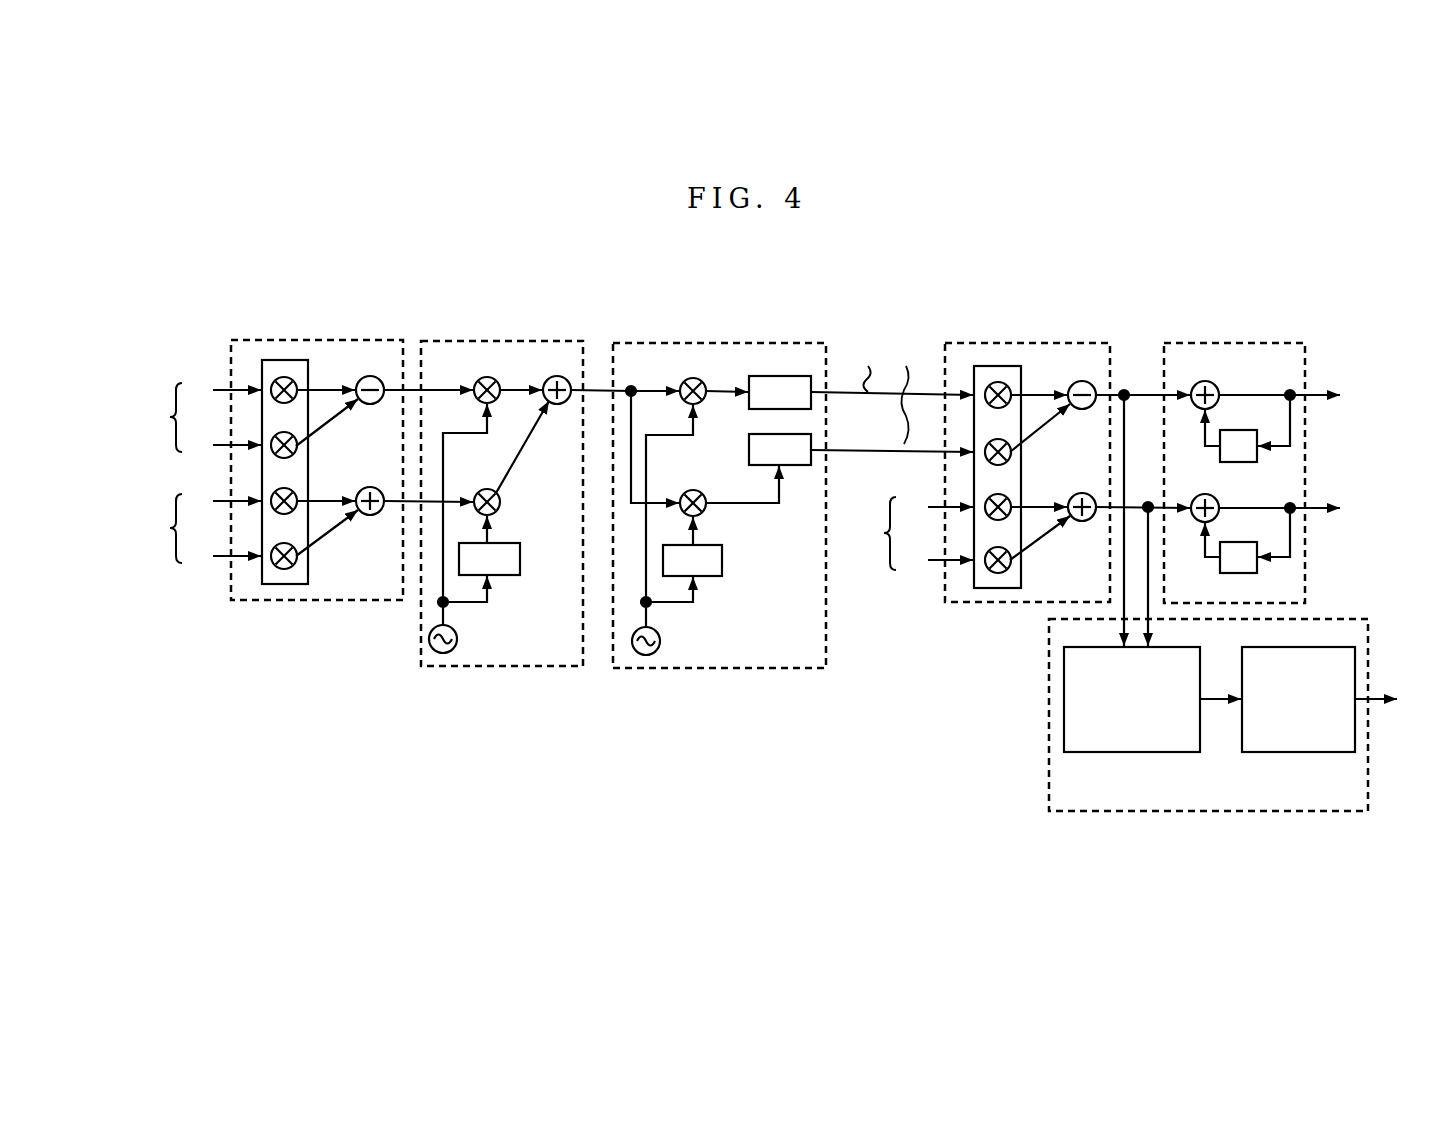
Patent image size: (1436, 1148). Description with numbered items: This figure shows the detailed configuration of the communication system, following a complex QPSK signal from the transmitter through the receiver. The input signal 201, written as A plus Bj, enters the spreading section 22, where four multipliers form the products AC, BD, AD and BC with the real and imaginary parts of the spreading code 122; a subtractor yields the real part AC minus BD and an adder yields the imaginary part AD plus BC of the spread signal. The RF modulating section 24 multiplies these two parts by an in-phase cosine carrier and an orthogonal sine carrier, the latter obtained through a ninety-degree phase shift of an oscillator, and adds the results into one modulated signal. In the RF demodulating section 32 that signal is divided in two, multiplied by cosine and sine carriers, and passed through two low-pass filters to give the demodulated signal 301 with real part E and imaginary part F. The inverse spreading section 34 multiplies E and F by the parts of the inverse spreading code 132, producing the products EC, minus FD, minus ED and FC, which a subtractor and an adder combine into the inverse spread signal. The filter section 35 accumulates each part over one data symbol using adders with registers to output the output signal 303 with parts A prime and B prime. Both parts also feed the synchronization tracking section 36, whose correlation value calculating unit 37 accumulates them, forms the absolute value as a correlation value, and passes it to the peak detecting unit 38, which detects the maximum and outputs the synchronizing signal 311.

The spreading section 22 is at (315, 340).
The RF modulating section 24 is at (498, 340).
The RF demodulating section 32 is at (720, 340).
The inverse spreading section 34 is at (1027, 340).
The filter section 35 is at (1237, 340).
The synchronization tracking section 36 is at (1049, 716).
The correlation value calculating unit 37 is at (1133, 752).
The peak detecting unit 38 is at (1300, 752).
The input signal 201 is at (194, 417).
The spreading code 122 is at (194, 528).
The inverse spreading code 132 is at (906, 533).
The demodulated signal 301 is at (918, 338).
The output signal 303 is at (1383, 388).
The synchronizing signal 311 is at (1395, 699).